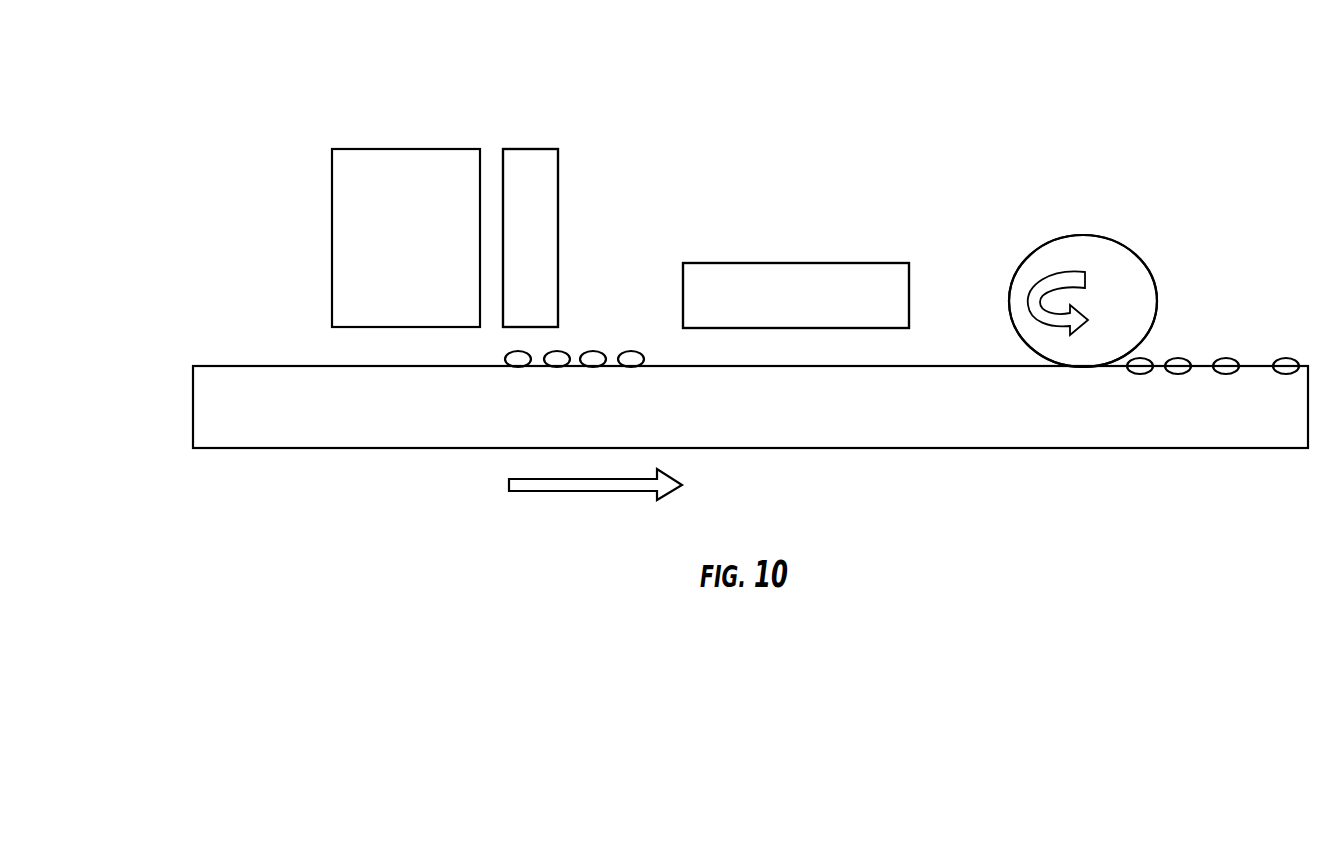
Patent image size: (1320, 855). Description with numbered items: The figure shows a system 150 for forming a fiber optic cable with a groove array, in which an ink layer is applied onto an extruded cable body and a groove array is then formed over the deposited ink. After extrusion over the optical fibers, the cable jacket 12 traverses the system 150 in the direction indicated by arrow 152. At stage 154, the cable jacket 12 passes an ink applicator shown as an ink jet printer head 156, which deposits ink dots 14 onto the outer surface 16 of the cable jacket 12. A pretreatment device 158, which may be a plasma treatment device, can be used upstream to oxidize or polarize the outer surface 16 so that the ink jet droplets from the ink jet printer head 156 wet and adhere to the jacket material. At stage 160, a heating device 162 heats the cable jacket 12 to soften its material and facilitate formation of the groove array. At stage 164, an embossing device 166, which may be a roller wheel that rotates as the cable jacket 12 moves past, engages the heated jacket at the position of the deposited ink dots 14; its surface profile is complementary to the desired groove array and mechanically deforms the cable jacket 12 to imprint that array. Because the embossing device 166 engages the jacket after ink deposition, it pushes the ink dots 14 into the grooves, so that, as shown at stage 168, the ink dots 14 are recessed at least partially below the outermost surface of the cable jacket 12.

The cable jacket 12 is at (317, 433).
The ink dots 14 is at (585, 348).
The outer surface 16 is at (300, 365).
The system 150 is at (983, 169).
The arrow 152 is at (582, 492).
The stage 154 is at (540, 136).
The ink jet printer head 156 is at (540, 222).
The pretreatment device 158 is at (421, 149).
The stage 160 is at (805, 201).
The heating device 162 is at (894, 283).
The stage 164 is at (1071, 222).
The embossing device 166 is at (1126, 265).
The stage 168 is at (1245, 384).